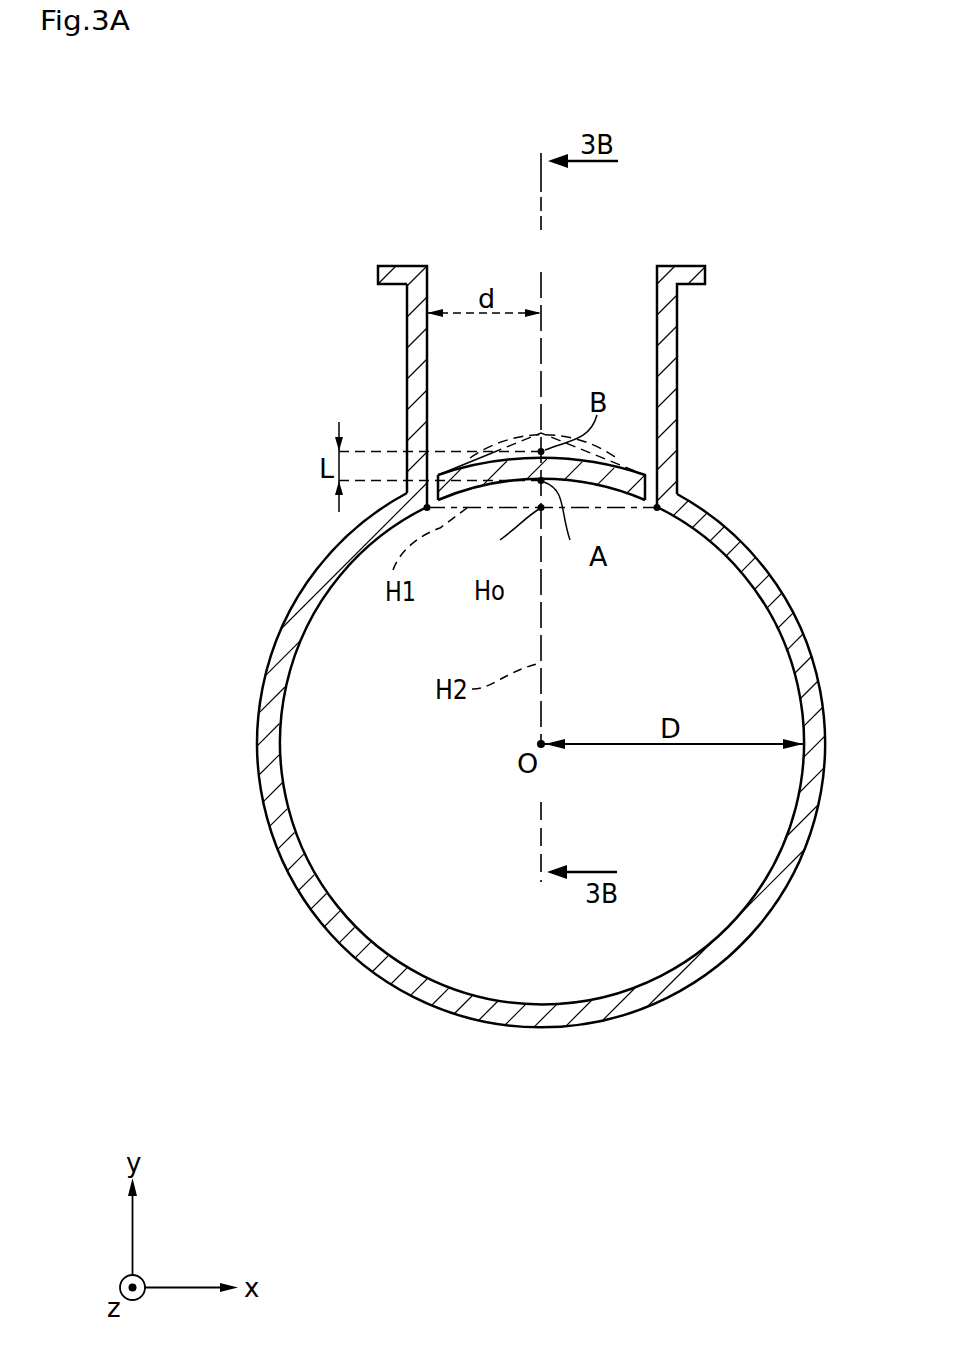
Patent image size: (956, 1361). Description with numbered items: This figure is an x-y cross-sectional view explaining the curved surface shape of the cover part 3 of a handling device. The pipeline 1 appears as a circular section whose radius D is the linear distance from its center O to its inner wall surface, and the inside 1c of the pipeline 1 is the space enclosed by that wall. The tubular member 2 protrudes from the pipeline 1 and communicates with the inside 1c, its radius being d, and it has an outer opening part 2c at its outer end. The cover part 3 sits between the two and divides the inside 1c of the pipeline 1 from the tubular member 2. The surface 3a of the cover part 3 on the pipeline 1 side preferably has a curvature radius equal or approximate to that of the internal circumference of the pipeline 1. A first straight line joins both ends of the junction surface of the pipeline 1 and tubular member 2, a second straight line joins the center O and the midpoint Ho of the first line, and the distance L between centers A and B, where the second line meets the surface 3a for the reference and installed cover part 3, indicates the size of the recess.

The pipeline 1 is at (298, 606).
The inside of the pipeline 1c is at (380, 789).
The tubular member 2 is at (564, 346).
The outer opening part 2c is at (455, 268).
The cover part 3 is at (615, 453).
The surface of the cover part on the pipeline side 3a is at (622, 494).